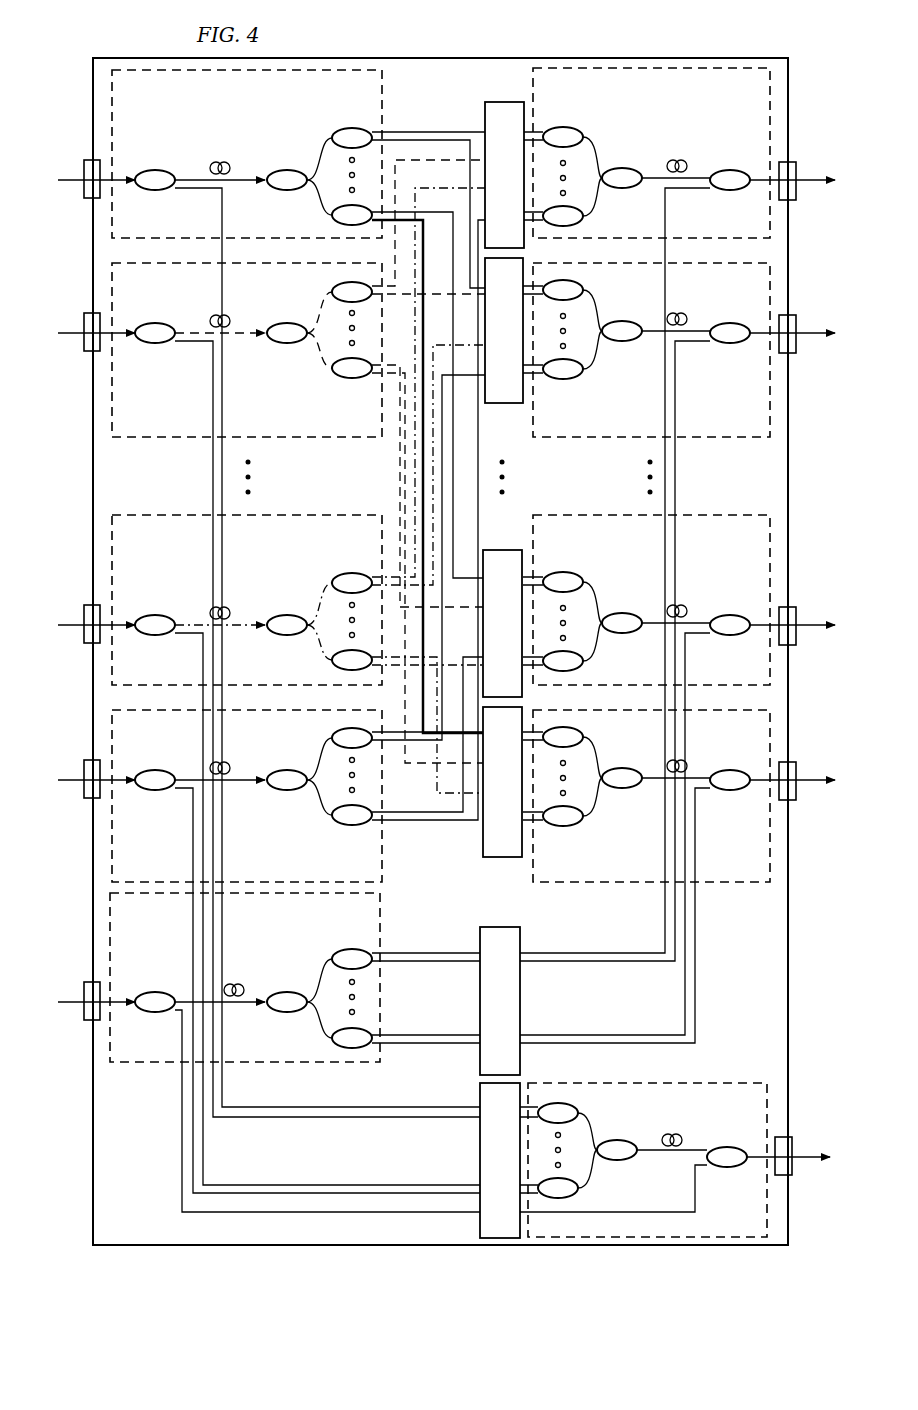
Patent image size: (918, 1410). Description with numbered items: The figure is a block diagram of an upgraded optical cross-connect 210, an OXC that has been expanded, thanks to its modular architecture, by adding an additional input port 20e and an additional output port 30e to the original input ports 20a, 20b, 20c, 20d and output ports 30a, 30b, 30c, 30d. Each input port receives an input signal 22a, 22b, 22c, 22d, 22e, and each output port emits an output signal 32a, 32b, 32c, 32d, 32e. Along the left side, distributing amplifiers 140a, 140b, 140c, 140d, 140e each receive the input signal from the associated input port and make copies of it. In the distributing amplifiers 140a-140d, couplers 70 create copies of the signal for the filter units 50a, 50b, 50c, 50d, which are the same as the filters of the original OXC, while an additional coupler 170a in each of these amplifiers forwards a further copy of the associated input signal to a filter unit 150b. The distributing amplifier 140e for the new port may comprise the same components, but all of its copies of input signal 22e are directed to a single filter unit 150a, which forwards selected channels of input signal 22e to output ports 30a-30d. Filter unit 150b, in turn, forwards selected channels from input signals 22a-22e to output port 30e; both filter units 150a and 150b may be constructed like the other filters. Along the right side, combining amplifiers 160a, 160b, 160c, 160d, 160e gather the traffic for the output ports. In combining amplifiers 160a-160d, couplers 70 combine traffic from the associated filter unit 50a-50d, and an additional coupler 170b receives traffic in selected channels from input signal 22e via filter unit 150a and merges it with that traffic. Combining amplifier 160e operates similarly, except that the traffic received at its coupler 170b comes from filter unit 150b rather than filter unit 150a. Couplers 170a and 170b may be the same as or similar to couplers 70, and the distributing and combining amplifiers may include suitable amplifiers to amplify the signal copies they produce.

The upgraded optical cross-connect 210 is at (564, 54).
The input port 20a is at (86, 205).
The input port 20b is at (86, 358).
The input port 20c is at (86, 650).
The input port 20d is at (86, 805).
The additional input port 20e is at (86, 1027).
The input signal 22a is at (80, 166).
The input signal 22b is at (80, 319).
The input signal 22c is at (80, 611).
The input signal 22d is at (80, 766).
The input signal 22e is at (80, 988).
The output port 30a is at (798, 204).
The output port 30b is at (798, 357).
The output port 30c is at (798, 649).
The output port 30d is at (798, 804).
The additional output port 30e is at (795, 1180).
The output signal 32a is at (800, 170).
The output signal 32b is at (800, 323).
The output signal 32c is at (800, 615).
The output signal 32d is at (800, 770).
The output signal 32e is at (798, 1147).
The coupler 70 is at (285, 168).
The distributing amplifier 140a is at (176, 226).
The distributing amplifier 140b is at (176, 425).
The distributing amplifier 140c is at (176, 670).
The distributing amplifier 140d is at (176, 865).
The distributing amplifier 140e is at (176, 1050).
The combining amplifier 160a is at (764, 226).
The combining amplifier 160b is at (764, 425).
The combining amplifier 160c is at (764, 670).
The combining amplifier 160d is at (764, 865).
The combining amplifier 160e is at (760, 1227).
The additional coupler 170a is at (162, 168).
The additional coupler 170b is at (735, 168).
The filter unit 50a is at (485, 120).
The filter unit 50b is at (505, 404).
The filter unit 50c is at (503, 549).
The filter unit 50d is at (503, 858).
The filter unit 150a is at (520, 942).
The filter unit 150b is at (480, 1150).